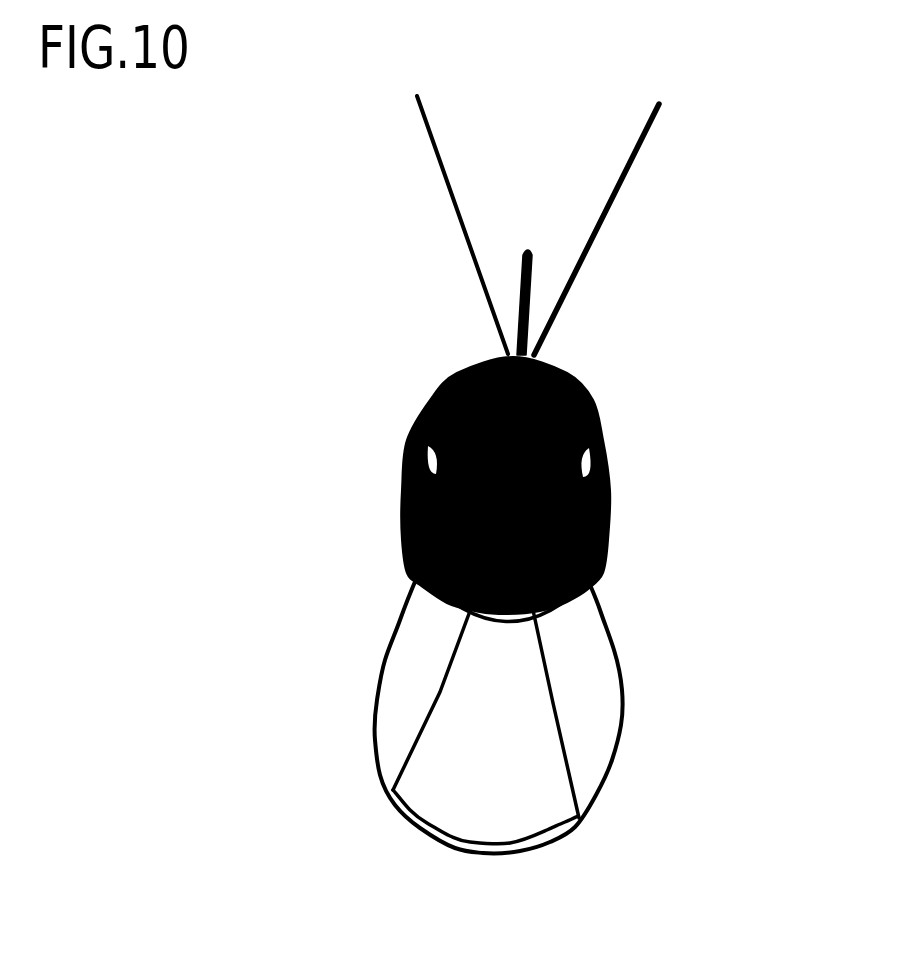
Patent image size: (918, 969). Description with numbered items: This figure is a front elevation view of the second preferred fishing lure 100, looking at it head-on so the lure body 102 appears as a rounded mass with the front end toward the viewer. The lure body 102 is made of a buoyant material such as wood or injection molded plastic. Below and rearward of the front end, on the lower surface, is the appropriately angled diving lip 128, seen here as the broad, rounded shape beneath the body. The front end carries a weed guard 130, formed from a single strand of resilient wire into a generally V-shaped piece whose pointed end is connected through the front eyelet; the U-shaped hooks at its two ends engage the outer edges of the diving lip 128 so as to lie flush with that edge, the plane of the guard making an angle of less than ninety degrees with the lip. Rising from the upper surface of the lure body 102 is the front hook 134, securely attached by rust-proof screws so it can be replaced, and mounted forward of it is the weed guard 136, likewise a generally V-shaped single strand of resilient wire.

The fishing lure 100 is at (525, 474).
The lure body 102 is at (606, 459).
The diving lip 128 is at (615, 647).
The weed guard 130 is at (440, 692).
The front hook 134 is at (524, 276).
The weed guard 136 is at (620, 211).